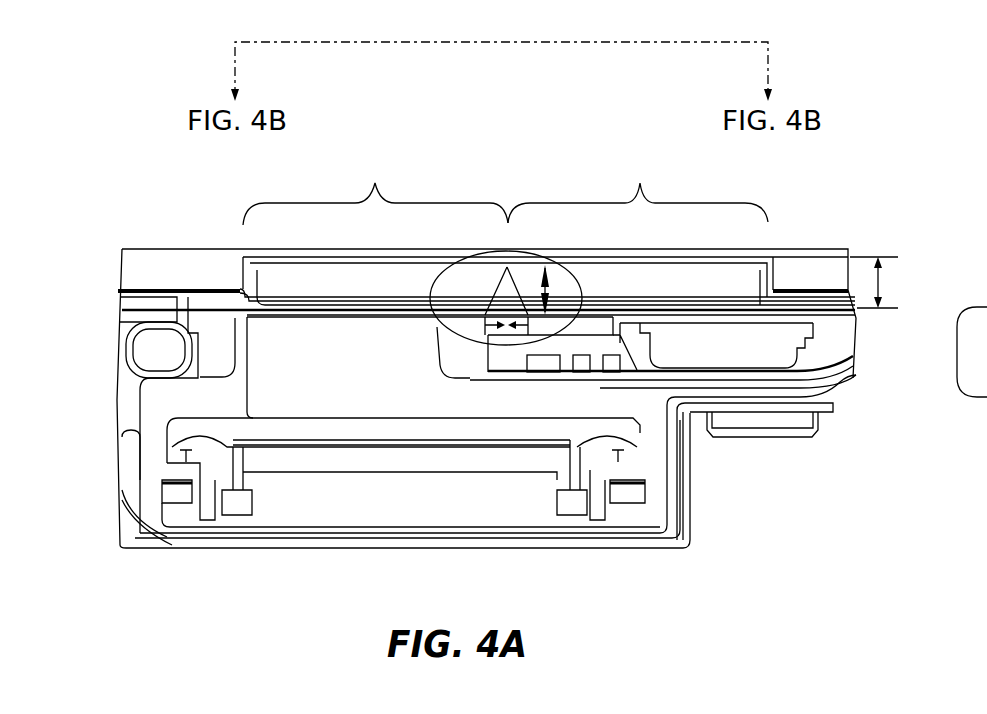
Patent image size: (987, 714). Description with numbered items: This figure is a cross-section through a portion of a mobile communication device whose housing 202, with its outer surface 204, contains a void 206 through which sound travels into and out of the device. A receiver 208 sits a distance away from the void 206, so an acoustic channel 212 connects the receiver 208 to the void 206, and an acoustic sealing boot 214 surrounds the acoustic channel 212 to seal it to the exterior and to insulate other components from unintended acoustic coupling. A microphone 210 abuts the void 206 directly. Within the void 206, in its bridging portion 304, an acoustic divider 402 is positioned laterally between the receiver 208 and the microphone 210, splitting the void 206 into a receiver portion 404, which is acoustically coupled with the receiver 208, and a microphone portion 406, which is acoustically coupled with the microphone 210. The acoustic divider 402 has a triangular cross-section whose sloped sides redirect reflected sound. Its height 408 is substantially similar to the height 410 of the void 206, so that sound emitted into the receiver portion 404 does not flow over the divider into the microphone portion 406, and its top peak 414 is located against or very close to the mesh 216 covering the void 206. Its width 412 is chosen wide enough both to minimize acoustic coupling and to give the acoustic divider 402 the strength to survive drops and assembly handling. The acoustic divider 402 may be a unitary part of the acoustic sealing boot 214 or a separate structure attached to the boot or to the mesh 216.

The housing 202 is at (185, 248).
The outer surface 204 is at (150, 248).
The void 206 is at (346, 290).
The receiver 208 is at (343, 473).
The microphone 210 is at (712, 342).
The acoustic channel 212 is at (303, 390).
The acoustic sealing boot 214 is at (212, 330).
The mesh 216 is at (686, 262).
The bridging portion 304 is at (567, 317).
The acoustic divider 402 is at (507, 292).
The receiver portion 404 is at (375, 187).
The microphone portion 406 is at (663, 269).
The height of acoustic divider 408 is at (547, 266).
The height of void 410 is at (880, 283).
The width of acoustic divider 412 is at (507, 325).
The top peak 414 is at (507, 265).